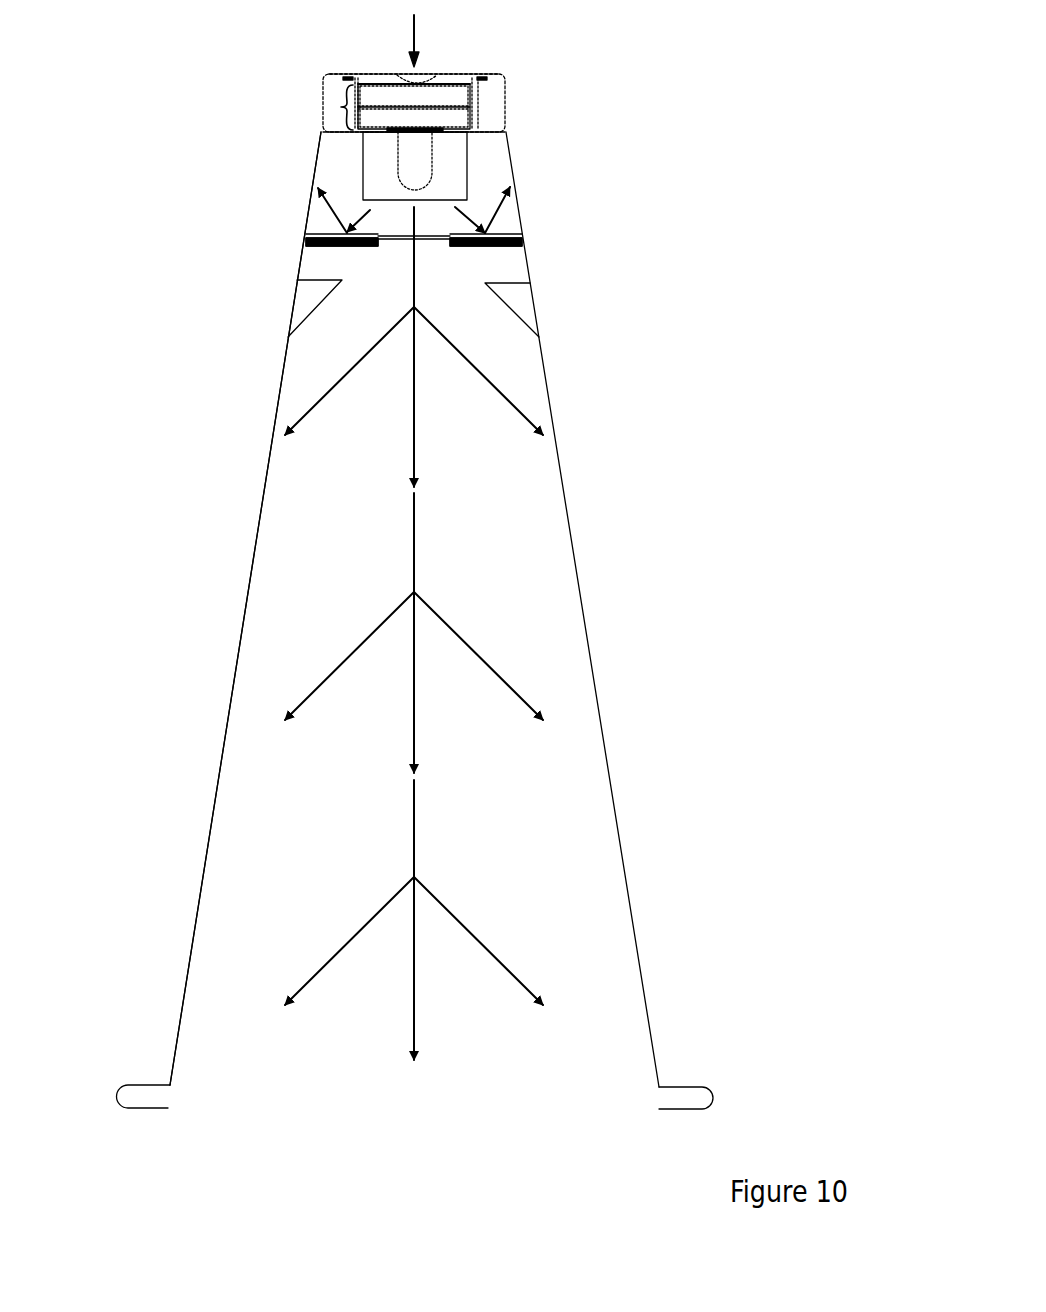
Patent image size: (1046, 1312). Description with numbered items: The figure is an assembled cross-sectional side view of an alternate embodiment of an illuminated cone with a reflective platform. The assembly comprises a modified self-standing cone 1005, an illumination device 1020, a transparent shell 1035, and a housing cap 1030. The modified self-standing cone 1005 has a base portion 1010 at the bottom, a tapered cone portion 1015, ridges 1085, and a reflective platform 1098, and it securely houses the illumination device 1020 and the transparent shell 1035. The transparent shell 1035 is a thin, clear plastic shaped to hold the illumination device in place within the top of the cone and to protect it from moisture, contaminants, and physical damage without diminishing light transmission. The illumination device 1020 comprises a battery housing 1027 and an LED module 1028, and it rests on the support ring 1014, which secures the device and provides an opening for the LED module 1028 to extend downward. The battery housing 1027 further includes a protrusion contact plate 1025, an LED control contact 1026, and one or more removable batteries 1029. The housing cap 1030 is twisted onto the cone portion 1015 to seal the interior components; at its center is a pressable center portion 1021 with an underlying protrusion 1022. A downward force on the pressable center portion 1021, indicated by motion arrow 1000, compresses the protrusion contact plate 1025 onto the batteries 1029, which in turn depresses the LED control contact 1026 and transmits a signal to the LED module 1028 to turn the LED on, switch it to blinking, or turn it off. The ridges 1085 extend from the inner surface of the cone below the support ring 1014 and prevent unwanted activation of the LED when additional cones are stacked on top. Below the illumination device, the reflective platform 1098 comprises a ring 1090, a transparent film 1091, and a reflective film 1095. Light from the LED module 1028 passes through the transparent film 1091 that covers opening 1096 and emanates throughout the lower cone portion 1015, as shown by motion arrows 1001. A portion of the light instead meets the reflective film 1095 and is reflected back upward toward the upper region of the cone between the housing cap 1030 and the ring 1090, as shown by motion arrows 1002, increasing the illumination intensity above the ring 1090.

The motion arrow 1000 is at (420, 16).
The motion arrows 1001 is at (414, 412).
The motion arrows 1002 is at (493, 218).
The modified self-standing cone 1005 is at (720, 898).
The base portion 1010 is at (122, 1107).
The support ring 1014 is at (333, 128).
The cone portion 1015 is at (253, 577).
The illumination device 1020 is at (484, 120).
The pressable center portion 1021 is at (403, 73).
The protrusion 1022 is at (433, 78).
The protrusion contact plate 1025 is at (400, 87).
The LED control contact 1026 is at (395, 129).
The battery housing 1027 is at (389, 103).
The LED module 1028 is at (425, 148).
The removable batteries 1029 is at (460, 97).
The housing cap 1030 is at (522, 62).
The transparent shell 1035 is at (362, 155).
The ridges 1085 is at (306, 297).
The ring 1090 is at (522, 242).
The transparent film 1091 is at (398, 240).
The reflective film 1095 is at (317, 229).
The opening 1096 is at (447, 248).
The reflective platform 1098 is at (292, 240).